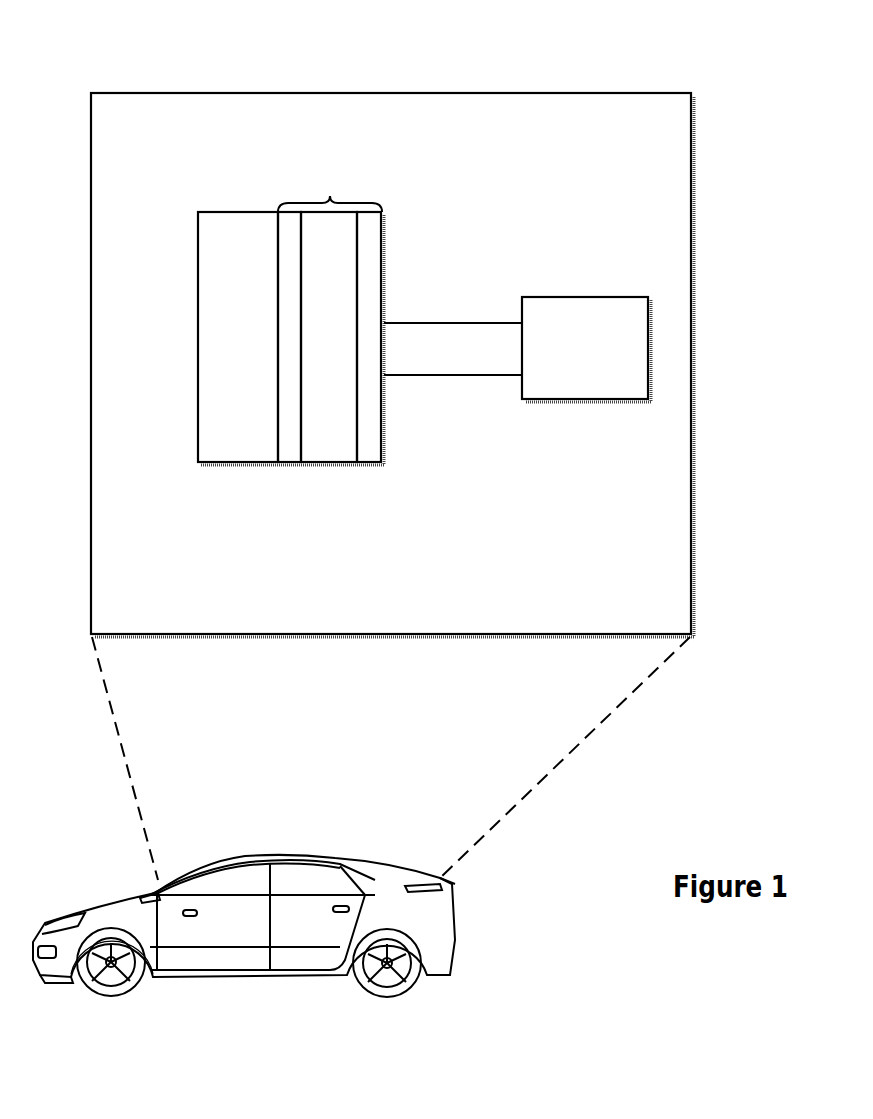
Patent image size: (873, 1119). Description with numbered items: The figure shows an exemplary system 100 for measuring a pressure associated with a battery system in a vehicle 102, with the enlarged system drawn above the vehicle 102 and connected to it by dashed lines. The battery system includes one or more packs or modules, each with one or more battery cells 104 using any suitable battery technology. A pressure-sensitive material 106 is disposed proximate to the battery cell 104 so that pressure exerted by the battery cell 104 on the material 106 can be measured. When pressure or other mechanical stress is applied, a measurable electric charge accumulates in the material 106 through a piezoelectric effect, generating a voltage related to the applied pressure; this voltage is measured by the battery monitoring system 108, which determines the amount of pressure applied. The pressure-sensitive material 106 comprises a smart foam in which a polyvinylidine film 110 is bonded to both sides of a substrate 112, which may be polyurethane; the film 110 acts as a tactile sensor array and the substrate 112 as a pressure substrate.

The system 100 is at (105, 129).
The vehicle 102 is at (133, 892).
The battery cell 104 is at (224, 346).
The pressure-sensitive material 106 is at (330, 197).
The battery monitoring system 108 is at (571, 357).
The polyvinylidine film 110 is at (370, 462).
The substrate 112 is at (315, 346).